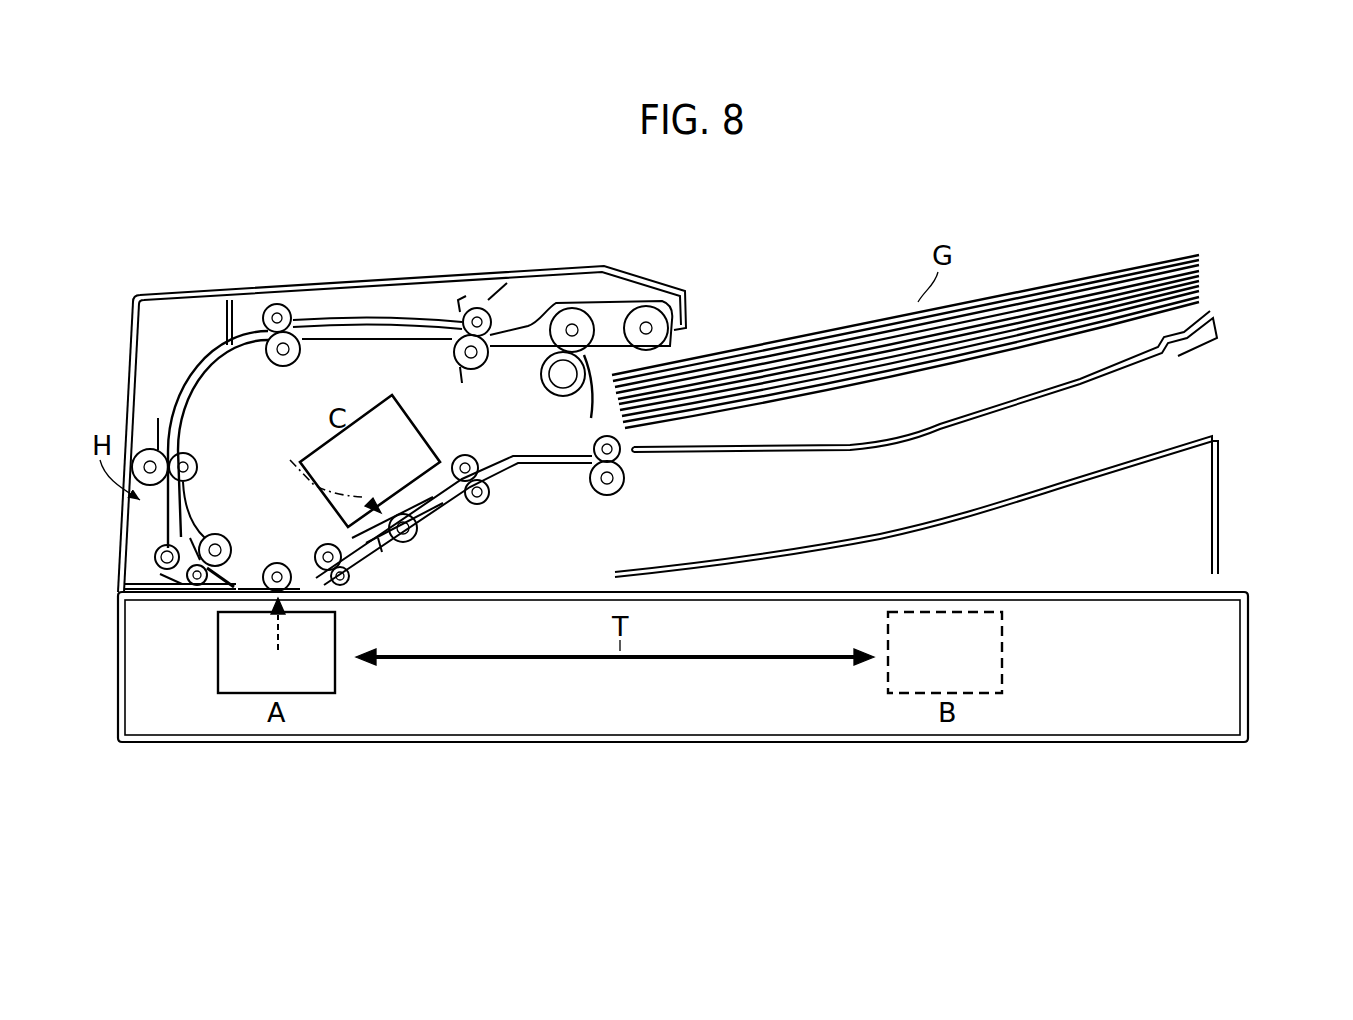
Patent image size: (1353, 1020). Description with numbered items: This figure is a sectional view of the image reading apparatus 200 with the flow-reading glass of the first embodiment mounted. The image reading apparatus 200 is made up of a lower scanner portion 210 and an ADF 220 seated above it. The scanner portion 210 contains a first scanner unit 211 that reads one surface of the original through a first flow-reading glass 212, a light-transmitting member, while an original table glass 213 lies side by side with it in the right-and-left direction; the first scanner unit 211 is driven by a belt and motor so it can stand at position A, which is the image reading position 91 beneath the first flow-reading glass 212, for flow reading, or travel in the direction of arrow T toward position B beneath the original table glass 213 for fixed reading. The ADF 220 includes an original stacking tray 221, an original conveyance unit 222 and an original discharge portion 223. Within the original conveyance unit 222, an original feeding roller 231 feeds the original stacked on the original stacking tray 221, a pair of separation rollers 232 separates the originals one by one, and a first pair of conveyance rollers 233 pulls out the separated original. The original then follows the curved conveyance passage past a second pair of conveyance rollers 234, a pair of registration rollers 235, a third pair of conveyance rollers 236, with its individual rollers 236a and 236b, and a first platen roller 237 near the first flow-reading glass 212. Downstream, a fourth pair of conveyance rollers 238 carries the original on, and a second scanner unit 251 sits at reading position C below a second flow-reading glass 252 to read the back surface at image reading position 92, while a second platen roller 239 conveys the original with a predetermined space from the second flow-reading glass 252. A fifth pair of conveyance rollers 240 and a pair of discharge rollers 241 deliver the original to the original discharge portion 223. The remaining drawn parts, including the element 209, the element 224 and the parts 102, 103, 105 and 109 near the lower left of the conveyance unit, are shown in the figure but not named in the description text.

The image reading apparatus 200 is at (872, 226).
The ADF 220 is at (382, 266).
The original conveyance unit 222 is at (210, 340).
The second pair of conveyance rollers 234 is at (278, 303).
The first pair of conveyance rollers 233 is at (479, 306).
The original feeding roller 231 is at (646, 308).
The pair of separation rollers 232 is at (549, 391).
The original stacking tray 221 is at (1172, 352).
The original discharge portion 223 is at (1110, 462).
The original table glass 213 is at (1030, 592).
The scanner portion 210 is at (1254, 679).
The base frame 209 is at (140, 600).
The first scanner unit 211 is at (218, 680).
The first flow-reading glass 212 is at (250, 597).
The image reading position 91 is at (278, 641).
The image reading position 92 is at (322, 472).
The second scanner unit 251 is at (370, 408).
The second flow-reading glass 252 is at (424, 507).
The fifth pair of conveyance rollers 240 is at (466, 452).
The second platen roller 239 is at (418, 533).
The fourth pair of conveyance rollers 238 is at (351, 576).
The first platen roller 237 is at (283, 563).
The third pair of conveyance rollers 236 is at (238, 516).
The registration roller 236a is at (224, 546).
The registration roller 236b is at (208, 570).
The pair of discharge rollers 241 is at (596, 493).
The pair of registration rollers 235 is at (145, 450).
The roller 103 is at (152, 550).
The guide member 105 is at (166, 574).
The guide 102 is at (170, 496).
The guide 109 is at (197, 543).
The lower guide plate 224 is at (143, 587).